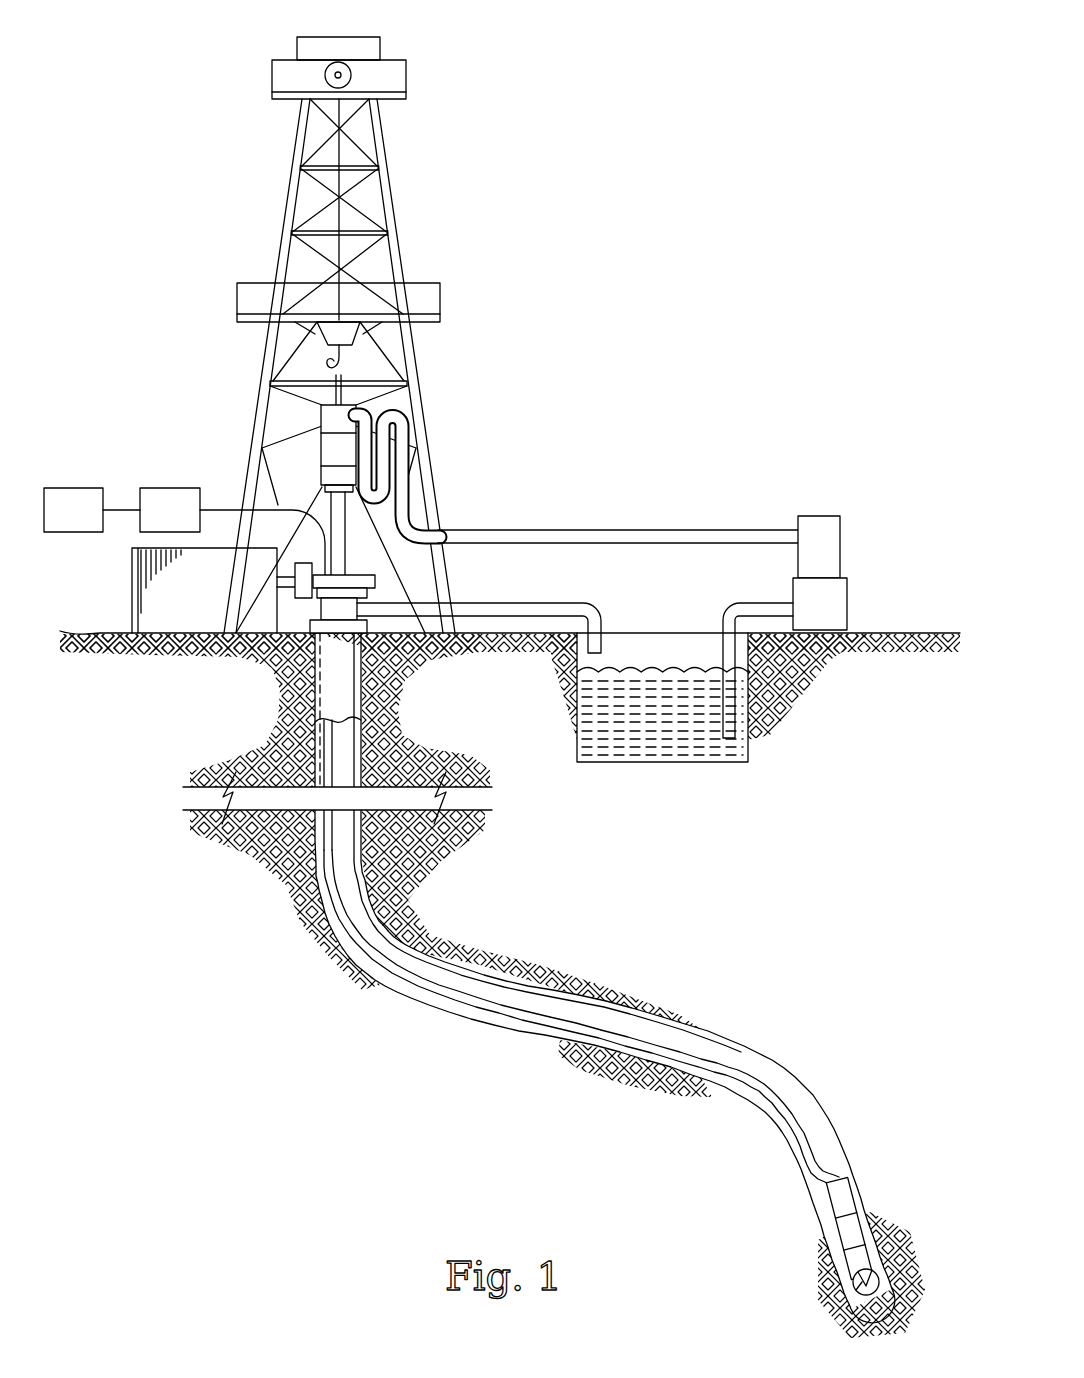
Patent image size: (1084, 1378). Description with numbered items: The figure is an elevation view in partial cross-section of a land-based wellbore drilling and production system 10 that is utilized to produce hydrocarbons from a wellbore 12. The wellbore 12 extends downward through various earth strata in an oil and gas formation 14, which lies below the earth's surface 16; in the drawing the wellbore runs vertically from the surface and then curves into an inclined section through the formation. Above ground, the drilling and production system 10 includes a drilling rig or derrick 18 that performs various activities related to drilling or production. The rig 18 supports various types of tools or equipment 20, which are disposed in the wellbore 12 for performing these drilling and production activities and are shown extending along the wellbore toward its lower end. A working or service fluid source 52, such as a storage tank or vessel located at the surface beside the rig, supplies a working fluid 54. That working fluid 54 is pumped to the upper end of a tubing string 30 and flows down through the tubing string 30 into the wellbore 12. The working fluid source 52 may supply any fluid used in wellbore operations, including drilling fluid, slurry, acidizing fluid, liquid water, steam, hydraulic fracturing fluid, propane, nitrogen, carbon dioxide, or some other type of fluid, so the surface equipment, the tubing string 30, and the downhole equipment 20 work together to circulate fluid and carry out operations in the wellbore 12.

The wellbore drilling and production system 10 is at (153, 76).
The wellbore 12 is at (400, 1001).
The oil and gas formation 14 is at (528, 893).
The earth's surface 16 is at (905, 631).
The drilling rig or derrick 18 is at (392, 200).
The tools or equipment 20 is at (586, 1014).
The tubing string 30 is at (343, 749).
The working or service fluid source 52 is at (661, 764).
The working fluid 54 is at (653, 680).